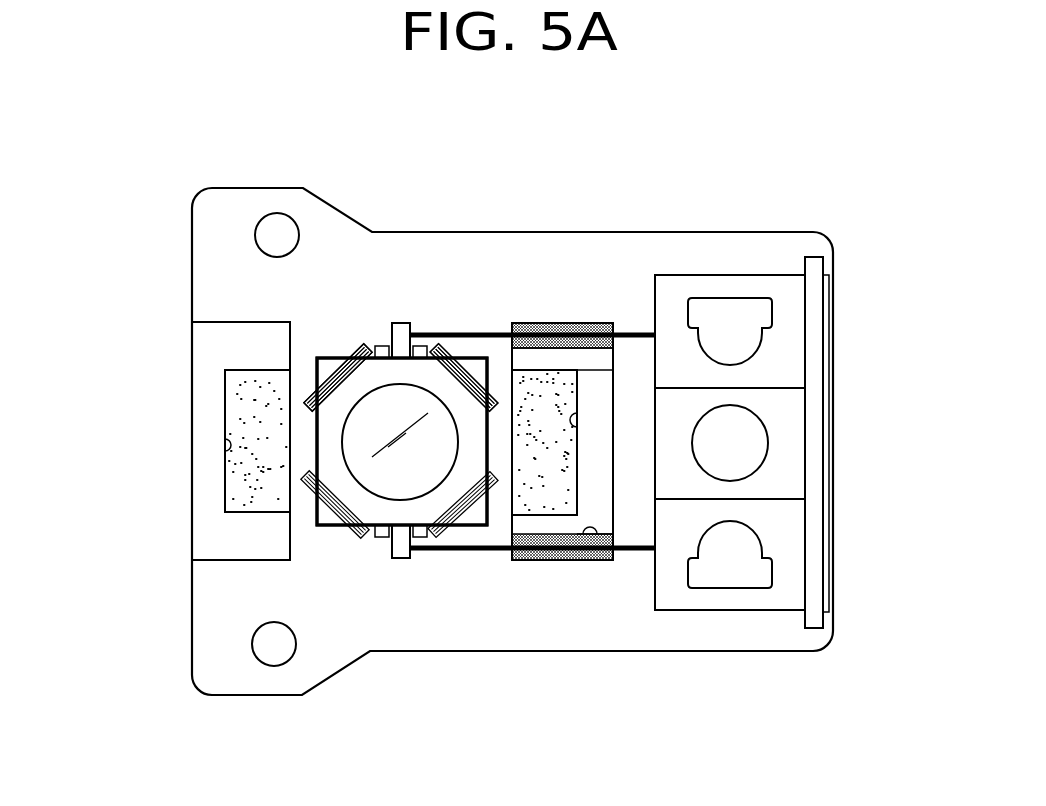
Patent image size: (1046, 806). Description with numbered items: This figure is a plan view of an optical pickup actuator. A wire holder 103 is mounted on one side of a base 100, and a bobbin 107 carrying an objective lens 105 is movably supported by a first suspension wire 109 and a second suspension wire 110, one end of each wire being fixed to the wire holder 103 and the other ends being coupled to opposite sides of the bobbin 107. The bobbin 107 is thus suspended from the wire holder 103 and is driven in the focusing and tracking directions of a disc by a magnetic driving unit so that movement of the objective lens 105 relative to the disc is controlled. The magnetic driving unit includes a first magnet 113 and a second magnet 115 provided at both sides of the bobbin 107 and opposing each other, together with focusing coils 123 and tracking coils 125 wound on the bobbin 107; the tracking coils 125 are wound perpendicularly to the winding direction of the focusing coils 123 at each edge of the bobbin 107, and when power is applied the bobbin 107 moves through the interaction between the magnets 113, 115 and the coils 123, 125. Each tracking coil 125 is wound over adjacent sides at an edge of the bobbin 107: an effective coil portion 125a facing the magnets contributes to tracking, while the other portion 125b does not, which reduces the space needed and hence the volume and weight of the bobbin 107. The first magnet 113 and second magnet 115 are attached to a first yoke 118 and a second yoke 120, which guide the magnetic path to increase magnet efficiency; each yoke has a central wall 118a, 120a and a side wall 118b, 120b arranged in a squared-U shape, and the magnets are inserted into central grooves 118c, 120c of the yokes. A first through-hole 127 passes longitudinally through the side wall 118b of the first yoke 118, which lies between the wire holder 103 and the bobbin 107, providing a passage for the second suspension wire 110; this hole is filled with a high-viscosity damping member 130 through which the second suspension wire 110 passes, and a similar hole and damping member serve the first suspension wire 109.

The base 100 is at (265, 688).
The wire holder 103 is at (732, 612).
The objective lens 105 is at (397, 483).
The bobbin 107 is at (418, 376).
The first suspension wire 109 is at (473, 333).
The second suspension wire 110 is at (462, 553).
The first magnet 113 is at (538, 498).
The second magnet 115 is at (243, 415).
The first yoke 118 is at (643, 178).
The central wall 118a is at (600, 385).
The side wall 118b is at (549, 358).
The central groove 118c is at (580, 420).
The second yoke 120 is at (80, 535).
The central wall 120a is at (198, 523).
The side wall 120b is at (240, 547).
The central groove 120c is at (228, 445).
The focusing coil 123 is at (317, 452).
The tracking coil 125 is at (387, 136).
The effective coil portion 125a is at (306, 400).
The other portion 125b is at (368, 345).
The first through-hole 127 is at (607, 560).
The damping member 130 is at (563, 560).